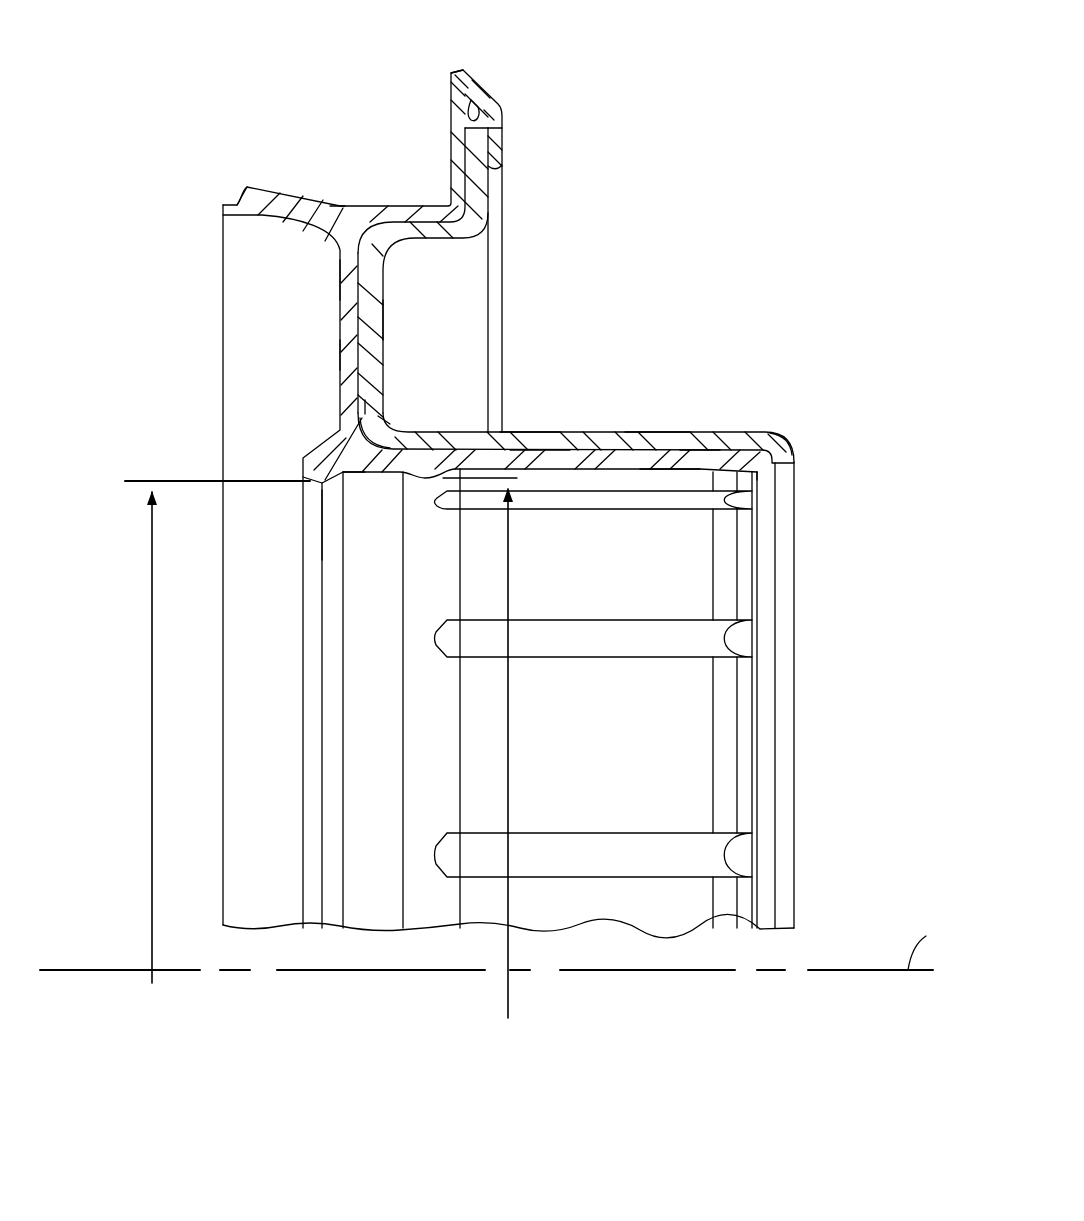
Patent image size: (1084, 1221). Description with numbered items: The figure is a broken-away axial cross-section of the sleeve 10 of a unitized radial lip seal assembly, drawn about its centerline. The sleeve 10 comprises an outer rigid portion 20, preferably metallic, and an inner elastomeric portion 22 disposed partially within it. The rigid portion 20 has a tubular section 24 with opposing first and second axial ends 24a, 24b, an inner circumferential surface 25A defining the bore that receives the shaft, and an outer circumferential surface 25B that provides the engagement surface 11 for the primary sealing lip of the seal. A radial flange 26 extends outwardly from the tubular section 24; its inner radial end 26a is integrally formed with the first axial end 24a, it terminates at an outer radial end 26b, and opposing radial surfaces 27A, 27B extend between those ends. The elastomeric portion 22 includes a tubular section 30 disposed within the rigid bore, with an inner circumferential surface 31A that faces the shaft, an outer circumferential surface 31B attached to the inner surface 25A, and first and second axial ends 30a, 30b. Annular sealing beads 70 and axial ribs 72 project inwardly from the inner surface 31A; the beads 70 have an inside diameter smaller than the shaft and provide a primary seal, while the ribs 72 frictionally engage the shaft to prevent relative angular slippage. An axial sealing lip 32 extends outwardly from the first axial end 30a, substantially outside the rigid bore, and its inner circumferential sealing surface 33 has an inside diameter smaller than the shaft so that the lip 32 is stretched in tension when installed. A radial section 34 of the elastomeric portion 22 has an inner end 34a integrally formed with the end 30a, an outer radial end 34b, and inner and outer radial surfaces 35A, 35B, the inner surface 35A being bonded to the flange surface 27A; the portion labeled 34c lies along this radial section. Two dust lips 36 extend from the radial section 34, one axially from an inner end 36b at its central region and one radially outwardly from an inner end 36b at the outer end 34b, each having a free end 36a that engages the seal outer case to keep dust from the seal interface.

The sleeve 10 is at (692, 285).
The engagement surface 11 is at (655, 431).
The outer rigid portion 20 is at (680, 388).
The inner elastomeric portion 22 is at (804, 605).
The tubular section 24 is at (598, 429).
The first axial end 24a is at (395, 447).
The second axial end 24b is at (779, 438).
The inner circumferential surface 25A is at (542, 452).
The outer circumferential surface 25B is at (528, 431).
The radial flange 26 is at (383, 350).
The inner radial end 26a is at (371, 409).
The outer radial end 26b is at (497, 137).
The radial surface 27A is at (352, 352).
The radial surface 27B is at (384, 323).
The tubular section 30 is at (610, 471).
The first axial end 30a is at (373, 457).
The second axial end 30b is at (765, 464).
The inner circumferential surface 31A is at (670, 472).
The outer circumferential surface 31B is at (695, 450).
The axial sealing lip 32 is at (330, 444).
The inner circumferential sealing surface 33 is at (324, 552).
The radial section 34 is at (328, 330).
The inner end 34a is at (348, 420).
The outer radial end 34b is at (463, 119).
The web upper portion 34c is at (353, 227).
The inner radial surface 35A is at (360, 310).
The outer radial surface 35B is at (340, 283).
The dust lip 36 is at (288, 195).
The free end 36a is at (246, 186).
The inner end 36b is at (337, 221).
The annular sealing bead 70 is at (440, 771).
The axial rib 72 is at (663, 658).